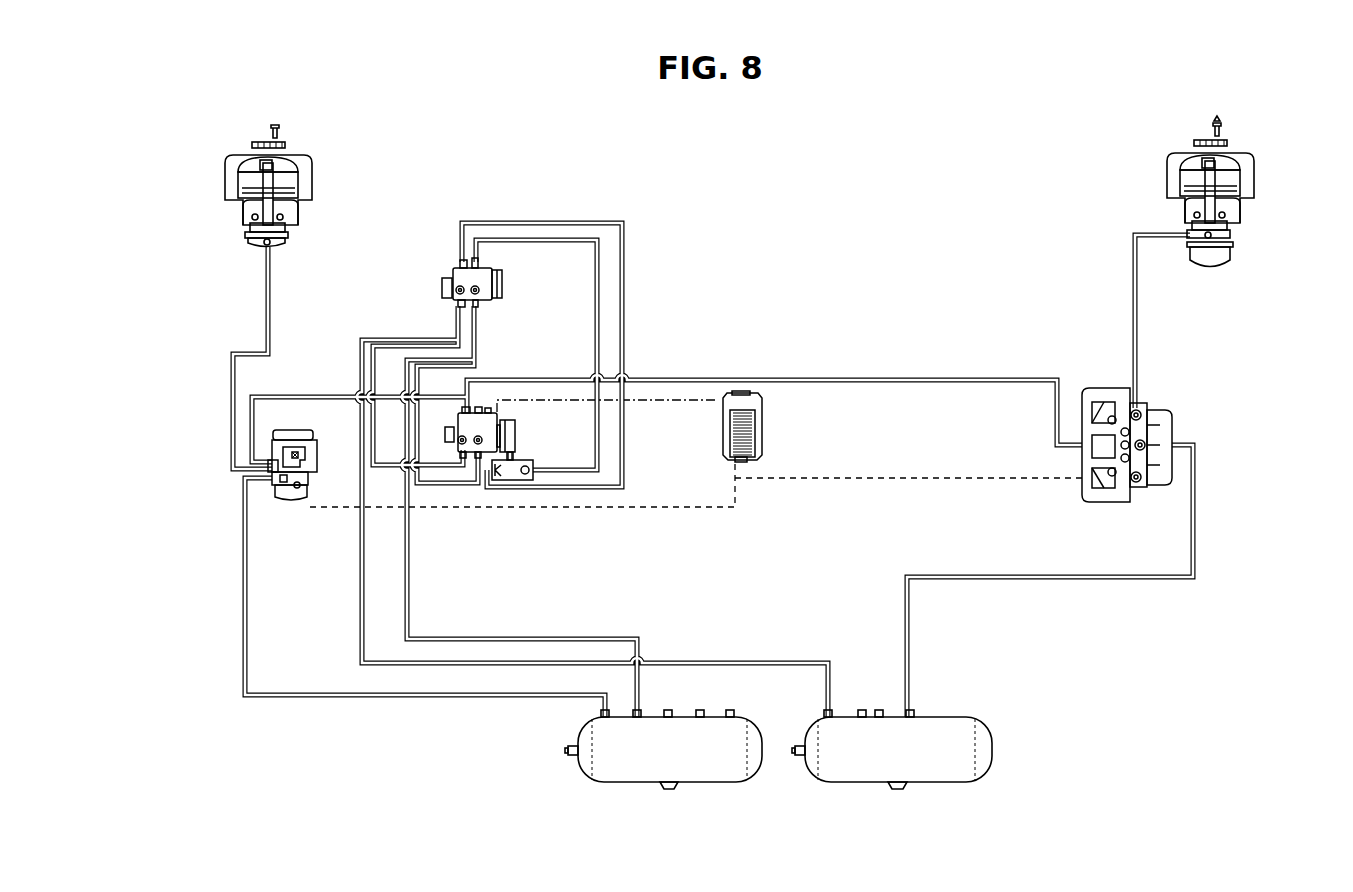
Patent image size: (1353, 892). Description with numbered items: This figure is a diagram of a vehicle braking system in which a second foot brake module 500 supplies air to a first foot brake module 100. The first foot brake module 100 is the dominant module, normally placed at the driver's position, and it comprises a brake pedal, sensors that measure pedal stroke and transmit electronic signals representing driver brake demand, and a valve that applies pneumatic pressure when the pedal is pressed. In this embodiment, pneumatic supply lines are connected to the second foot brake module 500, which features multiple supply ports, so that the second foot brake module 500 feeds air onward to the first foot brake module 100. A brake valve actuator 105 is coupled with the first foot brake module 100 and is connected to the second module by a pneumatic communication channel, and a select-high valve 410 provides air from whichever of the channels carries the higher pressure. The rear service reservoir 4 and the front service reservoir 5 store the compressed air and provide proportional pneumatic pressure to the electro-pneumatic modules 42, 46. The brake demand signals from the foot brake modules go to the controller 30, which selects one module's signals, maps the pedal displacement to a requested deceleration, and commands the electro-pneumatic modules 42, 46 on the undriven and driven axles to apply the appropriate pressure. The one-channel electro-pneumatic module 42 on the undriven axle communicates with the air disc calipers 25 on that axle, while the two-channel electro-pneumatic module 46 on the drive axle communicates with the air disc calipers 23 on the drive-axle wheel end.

The rear service reservoir 4 is at (963, 784).
The front service reservoir 5 is at (733, 784).
The air disc calipers 23 is at (1252, 161).
The air disc calipers 25 is at (228, 177).
The controller 30 is at (763, 421).
The electro-pneumatic module 42 is at (318, 457).
The electro-pneumatic module 46 is at (1177, 421).
The first foot brake module 100 is at (445, 438).
The brake valve actuator 105 is at (517, 429).
The select-high valve 410 is at (522, 481).
The second foot brake module 500 is at (505, 283).